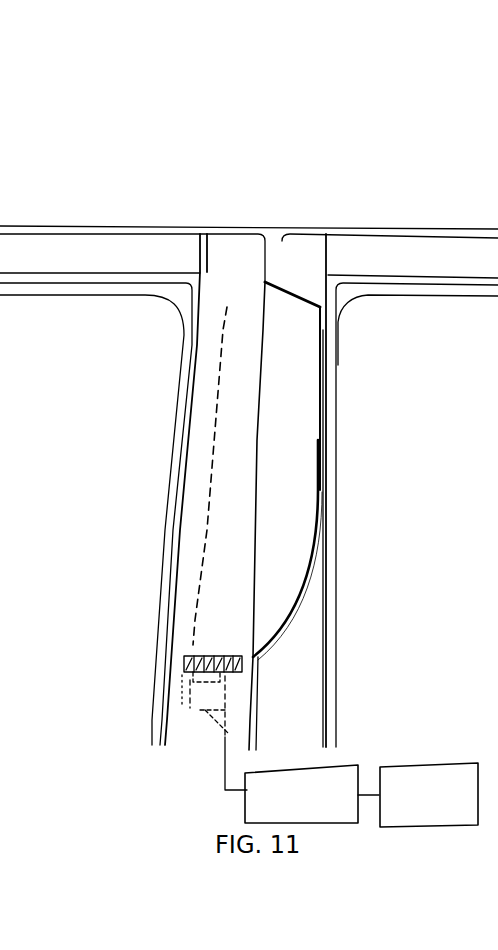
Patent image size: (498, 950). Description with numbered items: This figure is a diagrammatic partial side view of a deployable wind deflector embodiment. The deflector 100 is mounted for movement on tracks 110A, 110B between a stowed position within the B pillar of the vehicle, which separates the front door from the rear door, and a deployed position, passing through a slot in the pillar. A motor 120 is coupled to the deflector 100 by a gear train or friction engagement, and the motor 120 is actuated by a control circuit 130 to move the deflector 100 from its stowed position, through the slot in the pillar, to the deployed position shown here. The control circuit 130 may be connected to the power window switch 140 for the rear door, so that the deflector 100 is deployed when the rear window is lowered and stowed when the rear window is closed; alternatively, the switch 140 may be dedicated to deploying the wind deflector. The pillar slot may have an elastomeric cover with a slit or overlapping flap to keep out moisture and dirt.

The deflector 100 is at (283, 337).
The track 110A is at (222, 277).
The track 110B is at (233, 676).
The motor 120 is at (200, 698).
The control circuit 130 is at (347, 763).
The power window switch 140 is at (409, 832).